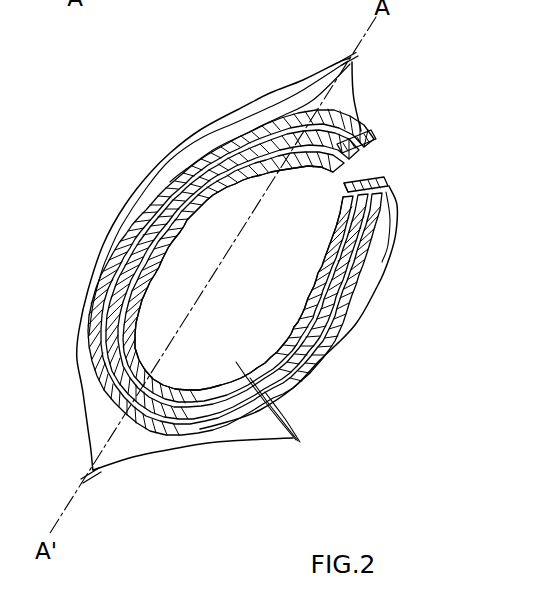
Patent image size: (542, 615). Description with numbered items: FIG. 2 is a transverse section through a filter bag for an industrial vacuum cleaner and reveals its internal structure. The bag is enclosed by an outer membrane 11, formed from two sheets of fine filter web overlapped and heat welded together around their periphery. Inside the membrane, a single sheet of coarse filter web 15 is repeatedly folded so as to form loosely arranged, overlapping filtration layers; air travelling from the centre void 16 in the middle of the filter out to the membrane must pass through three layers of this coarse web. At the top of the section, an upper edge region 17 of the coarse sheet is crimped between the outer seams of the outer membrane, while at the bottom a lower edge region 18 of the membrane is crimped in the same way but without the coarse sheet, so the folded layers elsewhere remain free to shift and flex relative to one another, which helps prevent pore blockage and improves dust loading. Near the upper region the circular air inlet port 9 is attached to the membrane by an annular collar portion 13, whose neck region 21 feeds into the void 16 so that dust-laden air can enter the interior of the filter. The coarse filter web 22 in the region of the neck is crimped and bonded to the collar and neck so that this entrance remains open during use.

The air inlet port 9 is at (362, 143).
The outer membrane 11 is at (80, 299).
The annular collar portion 13 is at (388, 185).
The coarse filter web 15 is at (258, 110).
The centre void 16 is at (232, 275).
The upper edge region 17 is at (368, 74).
The lower edge region 18 is at (100, 492).
The neck region 21 is at (364, 178).
The coarse filter web in the region of the neck 22 is at (388, 241).